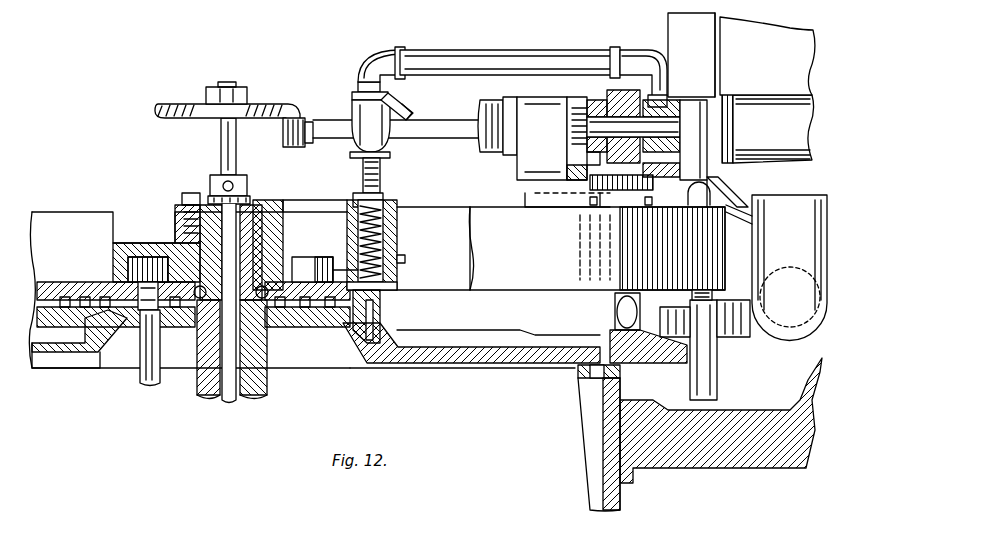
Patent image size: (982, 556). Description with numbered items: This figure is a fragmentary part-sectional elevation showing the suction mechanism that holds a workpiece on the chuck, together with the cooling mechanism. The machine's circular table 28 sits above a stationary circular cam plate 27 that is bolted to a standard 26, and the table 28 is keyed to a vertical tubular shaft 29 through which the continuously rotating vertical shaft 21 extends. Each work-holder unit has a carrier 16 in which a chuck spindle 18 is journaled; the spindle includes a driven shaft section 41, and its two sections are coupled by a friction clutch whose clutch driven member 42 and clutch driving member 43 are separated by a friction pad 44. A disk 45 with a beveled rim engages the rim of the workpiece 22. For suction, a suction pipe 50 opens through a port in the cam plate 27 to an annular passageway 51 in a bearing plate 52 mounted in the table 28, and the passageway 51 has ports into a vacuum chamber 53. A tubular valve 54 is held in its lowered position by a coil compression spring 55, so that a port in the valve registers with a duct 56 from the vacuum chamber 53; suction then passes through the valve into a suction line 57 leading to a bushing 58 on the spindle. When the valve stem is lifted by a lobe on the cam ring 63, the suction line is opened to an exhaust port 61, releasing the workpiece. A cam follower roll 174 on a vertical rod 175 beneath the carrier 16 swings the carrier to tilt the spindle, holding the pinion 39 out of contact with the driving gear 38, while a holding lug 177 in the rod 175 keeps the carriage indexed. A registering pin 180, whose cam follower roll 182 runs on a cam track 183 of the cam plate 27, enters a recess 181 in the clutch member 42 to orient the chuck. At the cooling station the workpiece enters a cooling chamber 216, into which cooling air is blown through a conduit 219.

The carrier 16 is at (522, 165).
The chuck spindle 18 is at (345, 110).
The vertical shaft 21 is at (225, 137).
The workpiece 22 is at (795, 100).
The standard 26 is at (588, 452).
The cam plate 27 is at (519, 355).
The table 28 is at (584, 259).
The tubular shaft 29 is at (246, 392).
The driving gear 38 is at (183, 92).
The pinion 39 is at (292, 146).
The driven shaft section 41 is at (470, 119).
The clutch driven member 42 is at (590, 160).
The clutch driving member 43 is at (600, 100).
The friction pad 44 is at (610, 97).
The disk 45 is at (728, 94).
The suction pipe 50 is at (146, 372).
The annular passageway 51 is at (316, 275).
The bearing plate 52 is at (118, 284).
The vacuum chamber 53 is at (148, 260).
The tubular valve 54 is at (390, 283).
The coil compression spring 55 is at (398, 240).
The duct 56 is at (350, 244).
The suction line 57 is at (578, 43).
The bushing 58 is at (670, 104).
The exhaust port 61 is at (405, 259).
The cam ring 63 is at (380, 325).
The cam follower roll 174 is at (732, 338).
The vertical rod 175 is at (716, 292).
The holding lug 177 is at (686, 370).
The registering pin 180 is at (640, 178).
The recess 181 is at (624, 90).
The cam follower roll 182 is at (620, 310).
The cam track 183 is at (630, 335).
The cooling chamber 216 is at (783, 43).
The conduit 219 is at (787, 204).